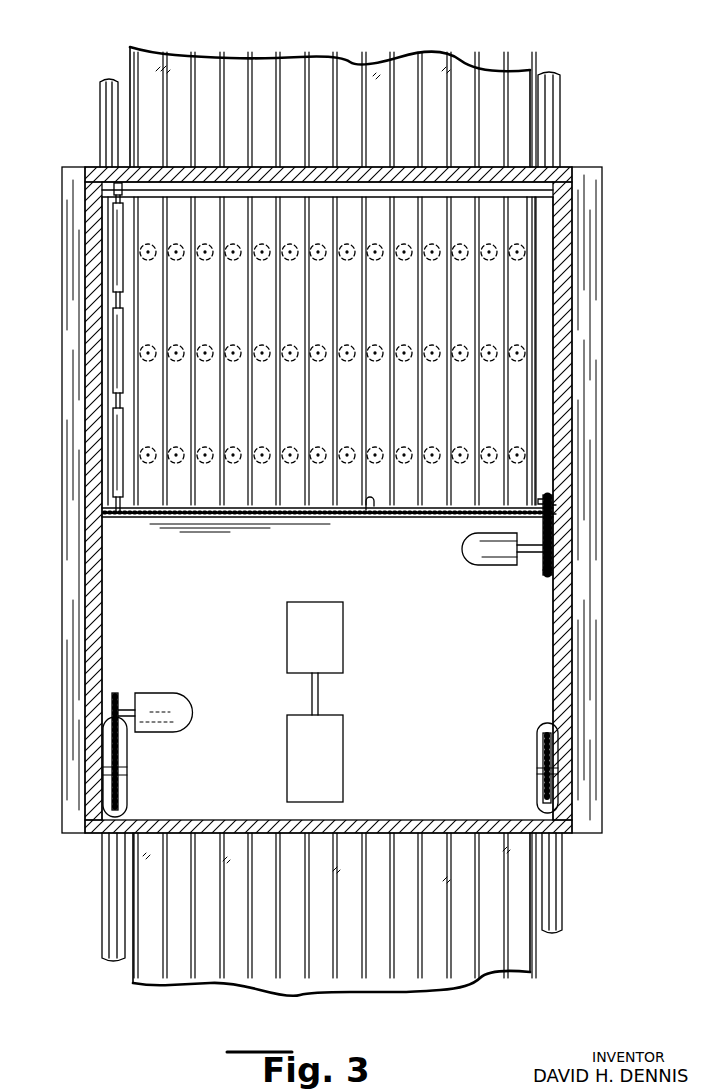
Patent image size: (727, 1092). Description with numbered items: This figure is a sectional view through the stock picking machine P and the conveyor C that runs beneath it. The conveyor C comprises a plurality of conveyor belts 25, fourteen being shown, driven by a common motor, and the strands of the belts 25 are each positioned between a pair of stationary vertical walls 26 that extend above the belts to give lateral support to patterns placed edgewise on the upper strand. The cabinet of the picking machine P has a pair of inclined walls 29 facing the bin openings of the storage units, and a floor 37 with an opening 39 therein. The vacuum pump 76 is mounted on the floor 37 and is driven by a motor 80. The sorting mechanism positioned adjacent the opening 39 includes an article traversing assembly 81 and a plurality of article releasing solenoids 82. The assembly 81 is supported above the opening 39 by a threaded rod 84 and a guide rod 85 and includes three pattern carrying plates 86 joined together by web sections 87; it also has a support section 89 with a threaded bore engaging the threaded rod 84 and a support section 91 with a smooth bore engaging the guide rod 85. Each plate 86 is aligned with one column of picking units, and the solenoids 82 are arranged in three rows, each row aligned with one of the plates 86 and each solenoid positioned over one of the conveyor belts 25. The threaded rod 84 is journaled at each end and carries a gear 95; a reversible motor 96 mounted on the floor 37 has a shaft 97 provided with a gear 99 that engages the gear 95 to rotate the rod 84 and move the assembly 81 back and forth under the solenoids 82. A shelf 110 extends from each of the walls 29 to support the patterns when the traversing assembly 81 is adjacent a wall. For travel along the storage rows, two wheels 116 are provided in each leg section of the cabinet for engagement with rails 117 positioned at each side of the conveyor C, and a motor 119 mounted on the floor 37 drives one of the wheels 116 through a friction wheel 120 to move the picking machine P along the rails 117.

The conveyor C is at (374, 56).
The stock picking machine P is at (351, 500).
The conveyor belts 25 is at (208, 980).
The stationary vertical walls 26 is at (192, 957).
The inclined walls 29 is at (80, 420).
The floor 37 is at (520, 192).
The opening 39 is at (370, 518).
The vacuum pump 76 is at (315, 658).
The motor 80 is at (315, 758).
The article traversing assembly 81 is at (96, 346).
The article releasing solenoids 82 is at (205, 260).
The threaded rod 84 is at (282, 518).
The guide rod 85 is at (398, 193).
The pattern carrying plates 86 is at (114, 253).
The web sections 87 is at (121, 300).
The support section 89 is at (118, 510).
The support section 91 is at (115, 183).
The gear 95 is at (552, 498).
The reversible motor 96 is at (484, 560).
The shaft 97 is at (528, 545).
The gear 99 is at (548, 574).
The shelf 110 is at (547, 250).
The wheels 116 is at (118, 798).
The rails 117 is at (108, 920).
The motor 119 is at (160, 732).
The friction wheel 120 is at (116, 694).